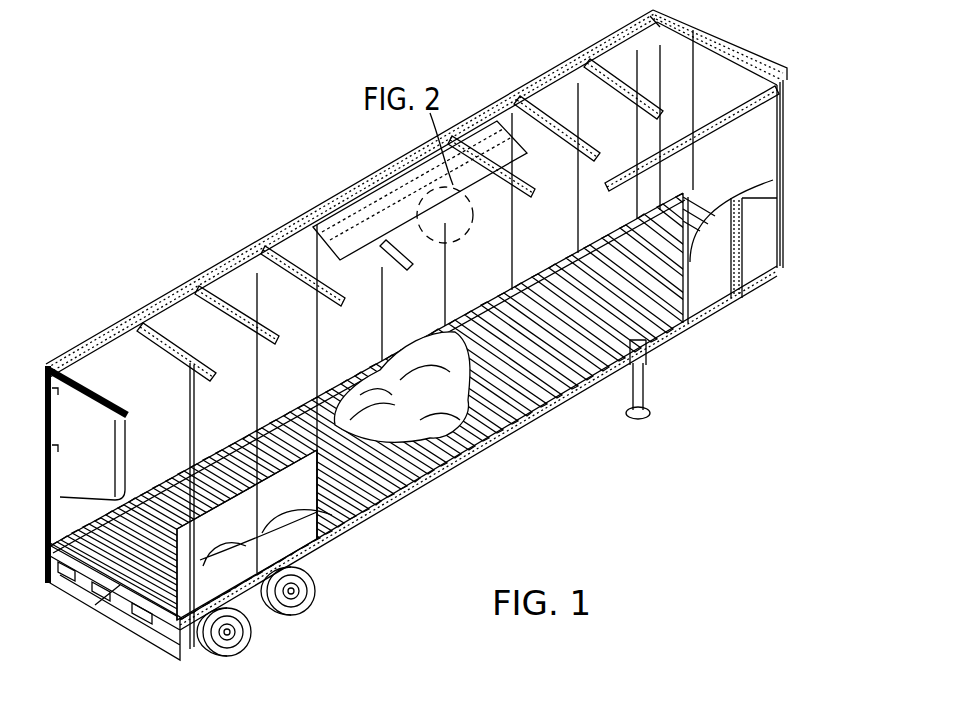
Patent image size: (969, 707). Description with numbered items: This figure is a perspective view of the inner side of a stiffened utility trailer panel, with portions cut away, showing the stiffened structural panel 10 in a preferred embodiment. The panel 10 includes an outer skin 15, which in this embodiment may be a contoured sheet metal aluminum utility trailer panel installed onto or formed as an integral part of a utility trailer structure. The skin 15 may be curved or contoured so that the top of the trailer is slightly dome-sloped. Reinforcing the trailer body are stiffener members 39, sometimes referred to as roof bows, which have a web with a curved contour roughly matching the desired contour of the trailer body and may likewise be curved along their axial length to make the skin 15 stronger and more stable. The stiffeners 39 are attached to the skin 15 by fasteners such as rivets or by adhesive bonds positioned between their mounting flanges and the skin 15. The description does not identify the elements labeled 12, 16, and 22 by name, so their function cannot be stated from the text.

The trailer 10 is at (342, 217).
The conveyor floor 12 is at (442, 496).
The cover panel 15 is at (395, 207).
The bulk material 16 is at (442, 400).
The side panel 22 is at (753, 248).
The cross beam 39 is at (781, 76).